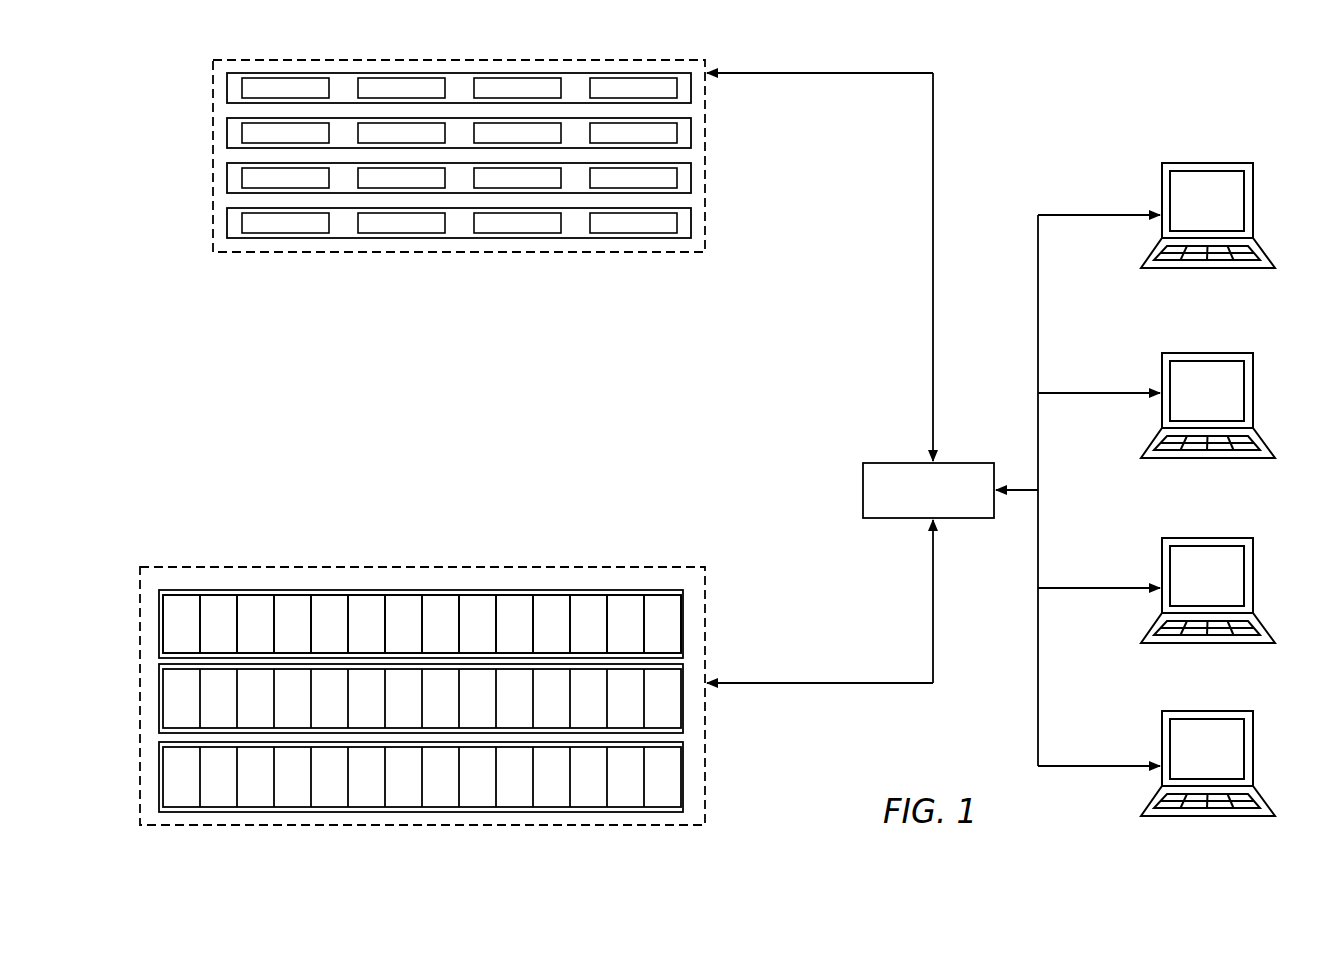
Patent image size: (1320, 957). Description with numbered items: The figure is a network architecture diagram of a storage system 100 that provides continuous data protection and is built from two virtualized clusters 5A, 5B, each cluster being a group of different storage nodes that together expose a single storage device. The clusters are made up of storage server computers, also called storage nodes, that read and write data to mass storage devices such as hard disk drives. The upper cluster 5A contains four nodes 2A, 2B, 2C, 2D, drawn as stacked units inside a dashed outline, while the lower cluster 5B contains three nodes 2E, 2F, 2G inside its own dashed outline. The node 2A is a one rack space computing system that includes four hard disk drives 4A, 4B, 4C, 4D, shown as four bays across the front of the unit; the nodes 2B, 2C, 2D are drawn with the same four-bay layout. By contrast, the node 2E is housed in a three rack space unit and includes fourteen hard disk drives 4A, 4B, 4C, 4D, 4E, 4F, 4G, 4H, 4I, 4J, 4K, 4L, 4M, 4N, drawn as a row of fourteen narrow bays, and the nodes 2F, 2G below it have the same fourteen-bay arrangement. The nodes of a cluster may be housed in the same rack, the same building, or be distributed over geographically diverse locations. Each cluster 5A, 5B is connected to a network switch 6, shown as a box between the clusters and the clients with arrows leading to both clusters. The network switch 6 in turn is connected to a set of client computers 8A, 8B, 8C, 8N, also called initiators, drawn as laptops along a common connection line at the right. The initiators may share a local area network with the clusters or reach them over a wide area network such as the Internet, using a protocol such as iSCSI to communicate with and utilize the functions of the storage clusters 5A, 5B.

The storage system 100 is at (1038, 80).
The virtualized cluster 5A is at (459, 146).
The virtualized cluster 5B is at (422, 686).
The storage server computer 2A is at (498, 93).
The storage server computer 2B is at (498, 138).
The storage server computer 2C is at (498, 183).
The storage server computer 2D is at (499, 228).
The storage server computer 2E is at (460, 624).
The storage server computer 2F is at (459, 701).
The storage server computer 2G is at (461, 777).
The hard disk drive 4A is at (296, 98).
The hard disk drive 4B is at (412, 98).
The hard disk drive 4C is at (528, 98).
The hard disk drive 4D is at (644, 98).
The hard disk drive 4E is at (341, 636).
The hard disk drive 4F is at (378, 636).
The hard disk drive 4G is at (415, 636).
The hard disk drive 4H is at (452, 636).
The hard disk drive 4I is at (487, 636).
The hard disk drive 4J is at (525, 636).
The hard disk drive 4K is at (563, 636).
The hard disk drive 4L is at (599, 636).
The hard disk drive 4M is at (638, 636).
The hard disk drive 4N is at (674, 636).
The network switch 6 is at (928, 481).
The client computer 8A is at (1208, 207).
The client computer 8B is at (1208, 397).
The client computer 8C is at (1208, 582).
The client computer 8N is at (1208, 755).